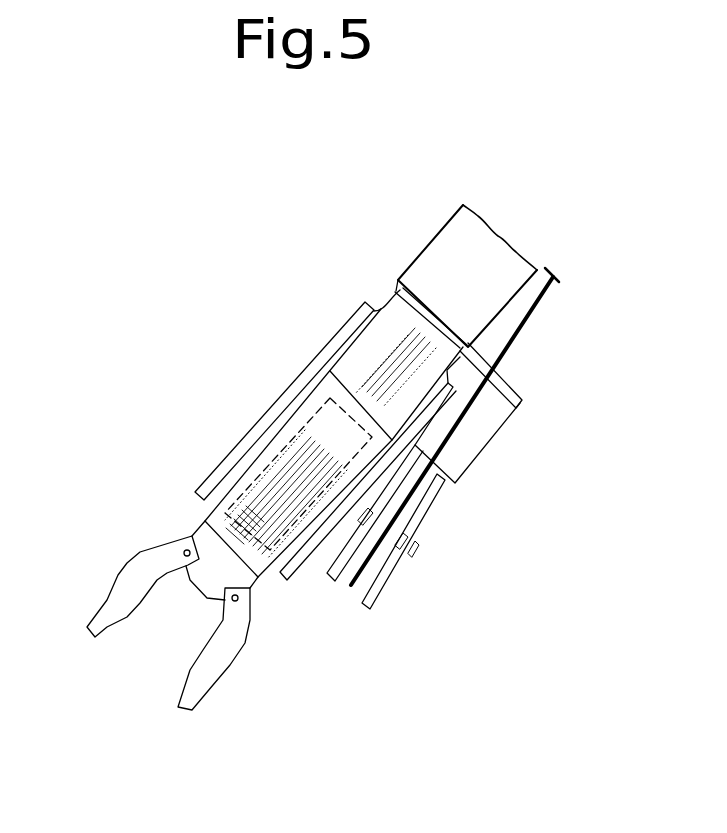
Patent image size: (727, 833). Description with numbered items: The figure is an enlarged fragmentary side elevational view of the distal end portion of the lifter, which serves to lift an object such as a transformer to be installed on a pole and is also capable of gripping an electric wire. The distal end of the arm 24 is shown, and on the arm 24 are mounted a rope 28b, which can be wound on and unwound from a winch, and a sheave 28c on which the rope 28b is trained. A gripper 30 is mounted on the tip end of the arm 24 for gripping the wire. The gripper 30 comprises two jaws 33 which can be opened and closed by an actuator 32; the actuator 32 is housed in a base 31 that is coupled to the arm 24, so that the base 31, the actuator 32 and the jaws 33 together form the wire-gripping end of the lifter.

The arm 24 is at (400, 280).
The rope 28b is at (522, 322).
The sheave 28c is at (418, 497).
The gripper 30 is at (160, 641).
The base 31 is at (257, 462).
The actuator 32 is at (275, 547).
The jaws 33 is at (105, 608).